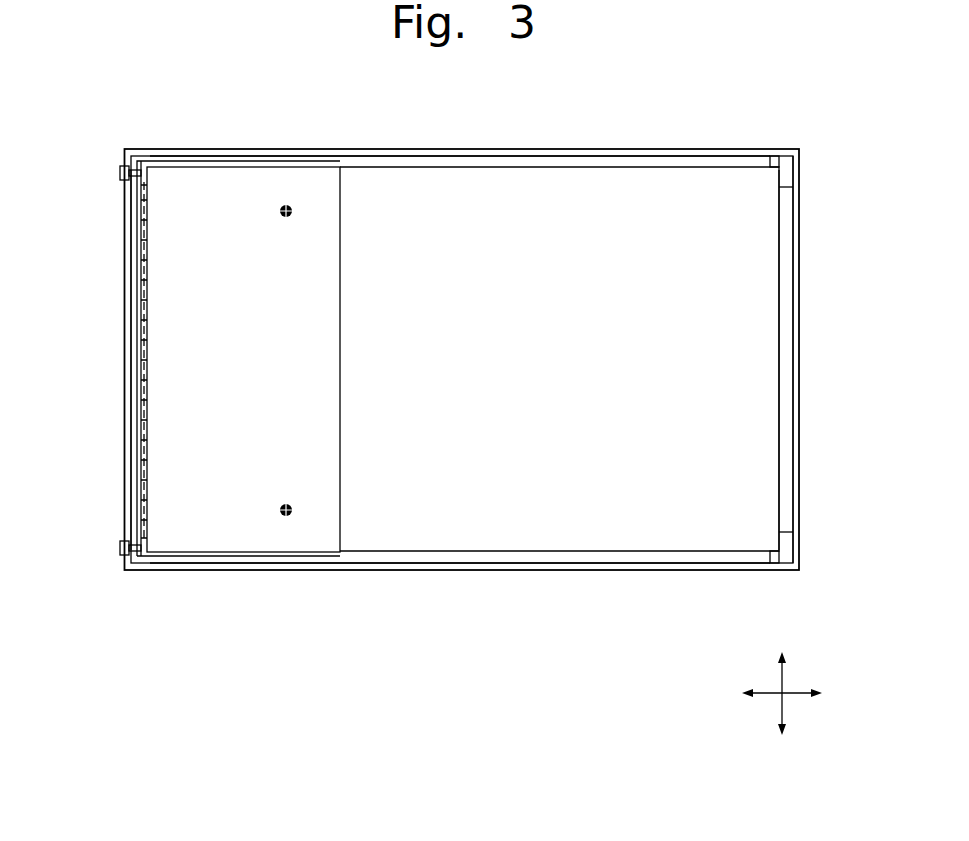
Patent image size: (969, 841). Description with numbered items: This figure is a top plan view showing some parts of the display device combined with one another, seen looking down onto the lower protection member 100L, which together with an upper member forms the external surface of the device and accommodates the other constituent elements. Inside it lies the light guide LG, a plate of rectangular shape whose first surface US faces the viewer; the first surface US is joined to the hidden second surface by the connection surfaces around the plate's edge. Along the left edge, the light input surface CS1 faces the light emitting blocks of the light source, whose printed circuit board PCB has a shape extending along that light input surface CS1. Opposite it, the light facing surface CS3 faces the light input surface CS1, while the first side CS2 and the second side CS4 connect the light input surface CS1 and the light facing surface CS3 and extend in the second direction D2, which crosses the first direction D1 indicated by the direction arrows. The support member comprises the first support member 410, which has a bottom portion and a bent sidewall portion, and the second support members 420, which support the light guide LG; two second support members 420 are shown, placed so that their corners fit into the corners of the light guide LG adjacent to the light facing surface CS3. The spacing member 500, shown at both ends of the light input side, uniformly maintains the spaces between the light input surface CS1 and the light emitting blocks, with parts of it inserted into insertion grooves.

The lower protection member 100L is at (396, 148).
The first side CS2 is at (604, 168).
The spacing member 500 is at (120, 173).
The second support member 420 is at (785, 172).
The first support member 410 is at (135, 234).
The light guide LG is at (781, 240).
The light input surface CS1 is at (141, 312).
The light facing surface CS3 is at (780, 326).
The printed circuit board PCB is at (141, 385).
The first surface US is at (558, 370).
The second side CS4 is at (515, 551).
The first direction D1 is at (784, 678).
The second direction D2 is at (798, 692).